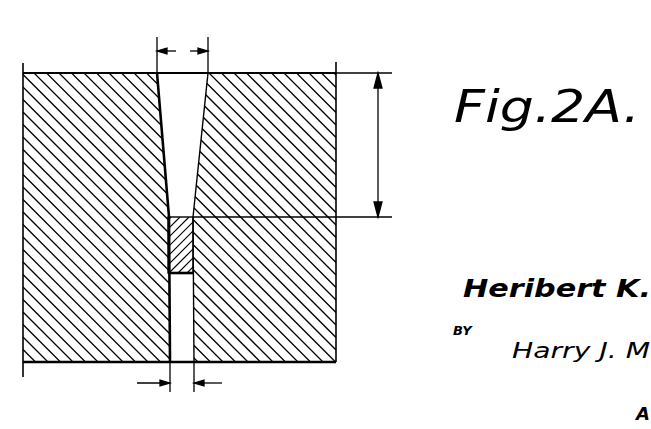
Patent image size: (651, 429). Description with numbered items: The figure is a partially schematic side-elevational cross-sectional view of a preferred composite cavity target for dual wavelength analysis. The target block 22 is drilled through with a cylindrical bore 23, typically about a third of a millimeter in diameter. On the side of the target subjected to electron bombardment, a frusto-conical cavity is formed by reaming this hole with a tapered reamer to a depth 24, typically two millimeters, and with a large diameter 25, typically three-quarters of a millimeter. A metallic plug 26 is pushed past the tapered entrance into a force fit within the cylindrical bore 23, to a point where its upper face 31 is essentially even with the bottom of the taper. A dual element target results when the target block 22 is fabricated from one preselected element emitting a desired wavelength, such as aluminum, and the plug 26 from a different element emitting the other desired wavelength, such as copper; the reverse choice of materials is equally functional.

The target block 22 is at (293, 147).
The bore 23 is at (182, 381).
The depth 24 is at (381, 141).
The large diameter 25 is at (181, 56).
The metallic plug 26 is at (173, 248).
The upper face 31 is at (183, 212).